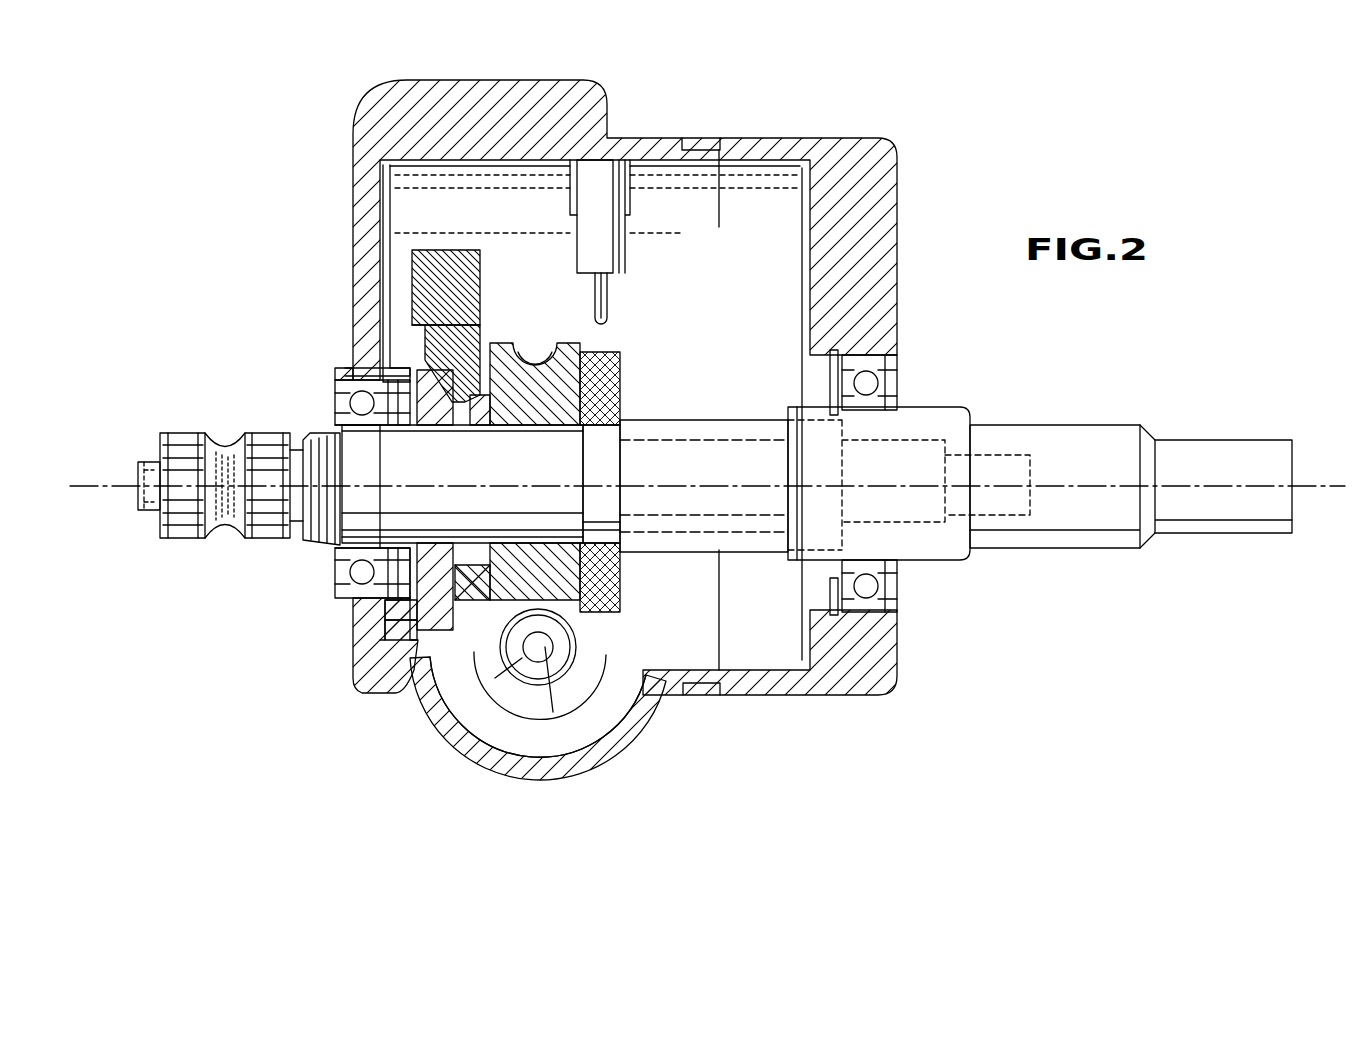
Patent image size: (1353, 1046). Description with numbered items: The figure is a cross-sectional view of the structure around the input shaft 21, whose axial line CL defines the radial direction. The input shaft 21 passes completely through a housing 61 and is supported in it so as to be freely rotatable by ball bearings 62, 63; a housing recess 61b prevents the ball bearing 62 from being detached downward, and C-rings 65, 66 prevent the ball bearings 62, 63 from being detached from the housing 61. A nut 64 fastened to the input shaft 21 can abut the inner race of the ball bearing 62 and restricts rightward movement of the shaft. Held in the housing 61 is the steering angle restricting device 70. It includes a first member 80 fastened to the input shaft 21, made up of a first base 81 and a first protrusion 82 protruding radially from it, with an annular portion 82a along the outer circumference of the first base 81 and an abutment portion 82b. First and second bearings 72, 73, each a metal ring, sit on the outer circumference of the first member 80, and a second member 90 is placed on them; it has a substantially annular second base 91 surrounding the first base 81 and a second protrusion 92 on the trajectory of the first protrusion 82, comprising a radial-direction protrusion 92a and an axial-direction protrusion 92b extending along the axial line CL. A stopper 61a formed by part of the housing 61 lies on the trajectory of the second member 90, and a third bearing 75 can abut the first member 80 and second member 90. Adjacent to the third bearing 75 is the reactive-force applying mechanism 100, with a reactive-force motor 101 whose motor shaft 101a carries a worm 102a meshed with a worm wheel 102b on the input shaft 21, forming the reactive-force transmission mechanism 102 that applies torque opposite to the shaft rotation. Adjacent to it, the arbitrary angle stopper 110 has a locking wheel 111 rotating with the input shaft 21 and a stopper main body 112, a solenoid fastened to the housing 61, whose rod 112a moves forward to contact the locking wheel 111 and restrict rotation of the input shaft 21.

The input shaft 21 is at (1062, 425).
The housing 61 is at (372, 122).
The stopper 61a is at (392, 698).
The housing recess 61b is at (338, 566).
The ball bearing 62 is at (340, 380).
The ball bearing 63 is at (872, 385).
The nut 64 is at (320, 545).
The C-ring 65 is at (365, 357).
The C-ring 66 is at (850, 356).
The steering angle restricting device 70 is at (597, 391).
The first bearing 72 is at (430, 612).
The second bearing 73 is at (468, 605).
The third bearing 75 is at (492, 382).
The first member 80 is at (297, 661).
The first base 81 is at (346, 598).
The first protrusion 82 is at (324, 687).
The annular portion 82a is at (360, 625).
The abutment portion 82b is at (372, 690).
The second member 90 is at (329, 283).
The second base 91 is at (398, 352).
The second protrusion 92 is at (356, 293).
The radial-direction protrusion 92a is at (425, 345).
The axial-direction protrusion 92b is at (412, 262).
The reactive-force applying mechanism 100 is at (583, 750).
The reactive-force motor 101 is at (553, 712).
The motor shaft 101a is at (482, 700).
The reactive-force transmission mechanism 102 is at (628, 722).
The worm 102a is at (577, 675).
The worm wheel 102b is at (660, 682).
The arbitrary angle stopper 110 is at (683, 272).
The locking wheel 111 is at (628, 394).
The stopper main body 112 is at (627, 260).
The rod 112a is at (610, 296).
The axial line CL is at (104, 488).